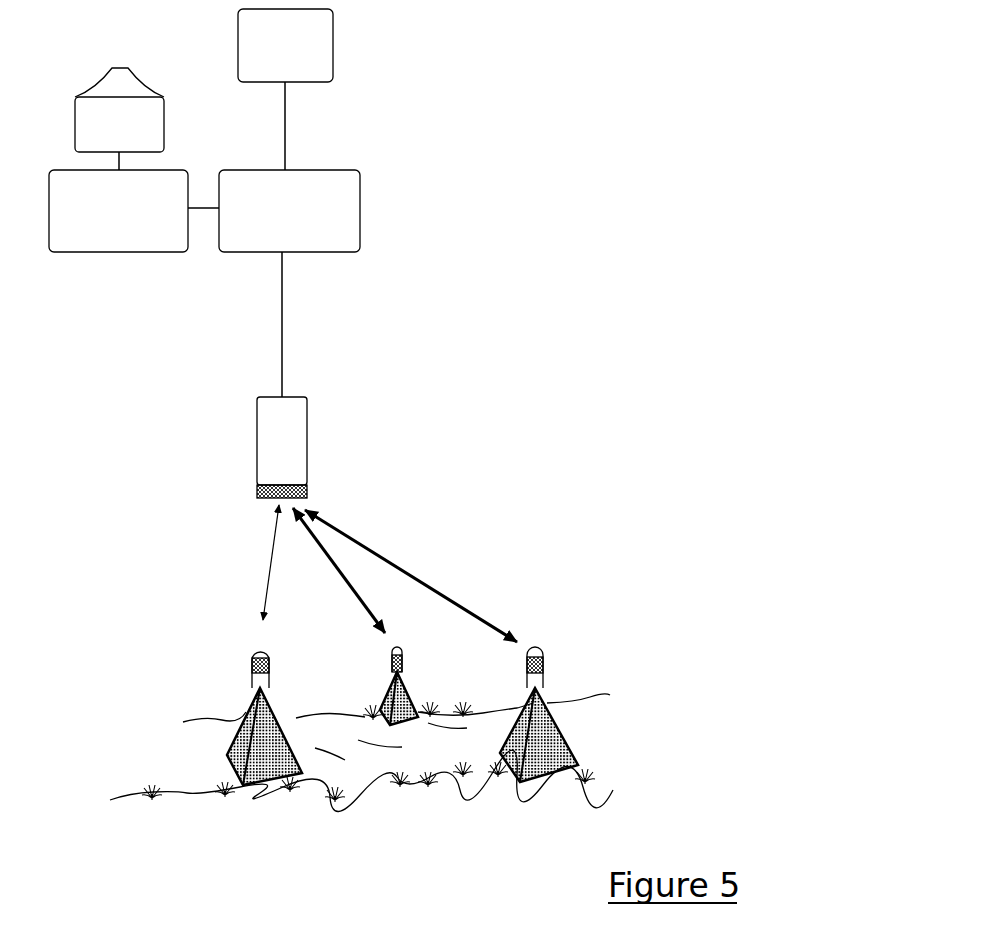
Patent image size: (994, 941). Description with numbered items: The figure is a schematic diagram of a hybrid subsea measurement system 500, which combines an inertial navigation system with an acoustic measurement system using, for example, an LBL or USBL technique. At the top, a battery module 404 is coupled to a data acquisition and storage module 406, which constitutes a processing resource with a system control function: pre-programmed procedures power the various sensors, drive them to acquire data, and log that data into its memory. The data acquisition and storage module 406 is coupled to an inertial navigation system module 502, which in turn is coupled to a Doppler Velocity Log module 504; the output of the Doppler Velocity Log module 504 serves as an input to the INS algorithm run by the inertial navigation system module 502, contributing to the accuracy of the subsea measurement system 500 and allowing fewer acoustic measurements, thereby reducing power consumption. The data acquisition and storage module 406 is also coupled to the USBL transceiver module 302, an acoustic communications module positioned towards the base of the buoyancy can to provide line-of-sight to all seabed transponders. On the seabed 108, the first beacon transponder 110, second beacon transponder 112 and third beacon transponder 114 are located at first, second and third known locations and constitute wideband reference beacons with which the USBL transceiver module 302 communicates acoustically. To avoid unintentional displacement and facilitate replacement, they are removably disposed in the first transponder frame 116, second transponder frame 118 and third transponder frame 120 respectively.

The seabed 108 is at (134, 795).
The first beacon transponder 110 is at (255, 680).
The second beacon transponder 112 is at (399, 665).
The third beacon transponder 114 is at (541, 678).
The first transponder frame 116 is at (232, 754).
The second transponder frame 118 is at (380, 695).
The third transponder frame 120 is at (552, 758).
The USBL transceiver module 302 is at (282, 447).
The battery module 404 is at (285, 45).
The data acquisition and storage module 406 is at (289, 211).
The hybrid subsea measurement system 500 is at (560, 288).
The inertial navigation system module 502 is at (118, 211).
The Doppler Velocity Log module 504 is at (119, 110).